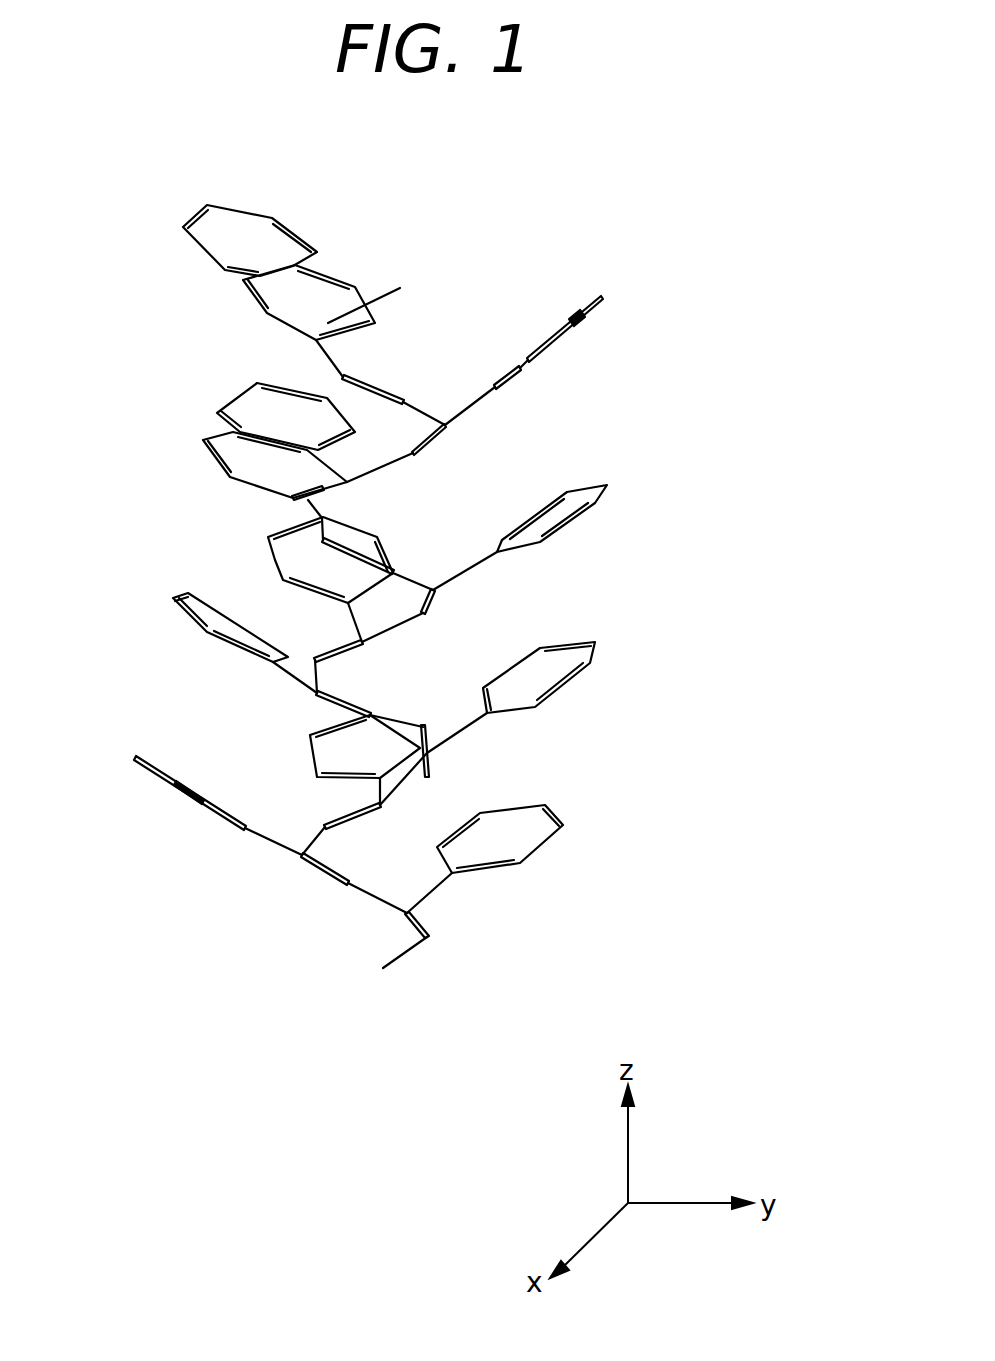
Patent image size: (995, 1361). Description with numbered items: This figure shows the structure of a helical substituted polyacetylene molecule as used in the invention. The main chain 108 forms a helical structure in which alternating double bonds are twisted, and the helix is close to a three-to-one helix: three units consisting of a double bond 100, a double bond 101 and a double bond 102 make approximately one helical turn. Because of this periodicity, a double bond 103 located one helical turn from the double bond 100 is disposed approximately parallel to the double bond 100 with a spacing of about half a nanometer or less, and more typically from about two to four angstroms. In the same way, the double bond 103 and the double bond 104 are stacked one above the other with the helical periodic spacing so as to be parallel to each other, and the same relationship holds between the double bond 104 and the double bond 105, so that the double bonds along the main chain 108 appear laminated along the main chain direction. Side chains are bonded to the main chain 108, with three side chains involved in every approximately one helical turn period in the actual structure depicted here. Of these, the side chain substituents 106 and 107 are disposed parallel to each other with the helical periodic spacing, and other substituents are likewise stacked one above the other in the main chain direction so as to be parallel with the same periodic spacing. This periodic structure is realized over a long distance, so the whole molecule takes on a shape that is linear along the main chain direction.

The double bond 100 is at (433, 442).
The double bond 101 is at (345, 503).
The double bond 102 is at (345, 553).
The double bond 103 is at (428, 611).
The double bond 104 is at (430, 763).
The double bond 105 is at (427, 927).
The side chain substituent 106 is at (560, 340).
The side chain substituent 107 is at (585, 512).
The main chain 108 is at (390, 287).